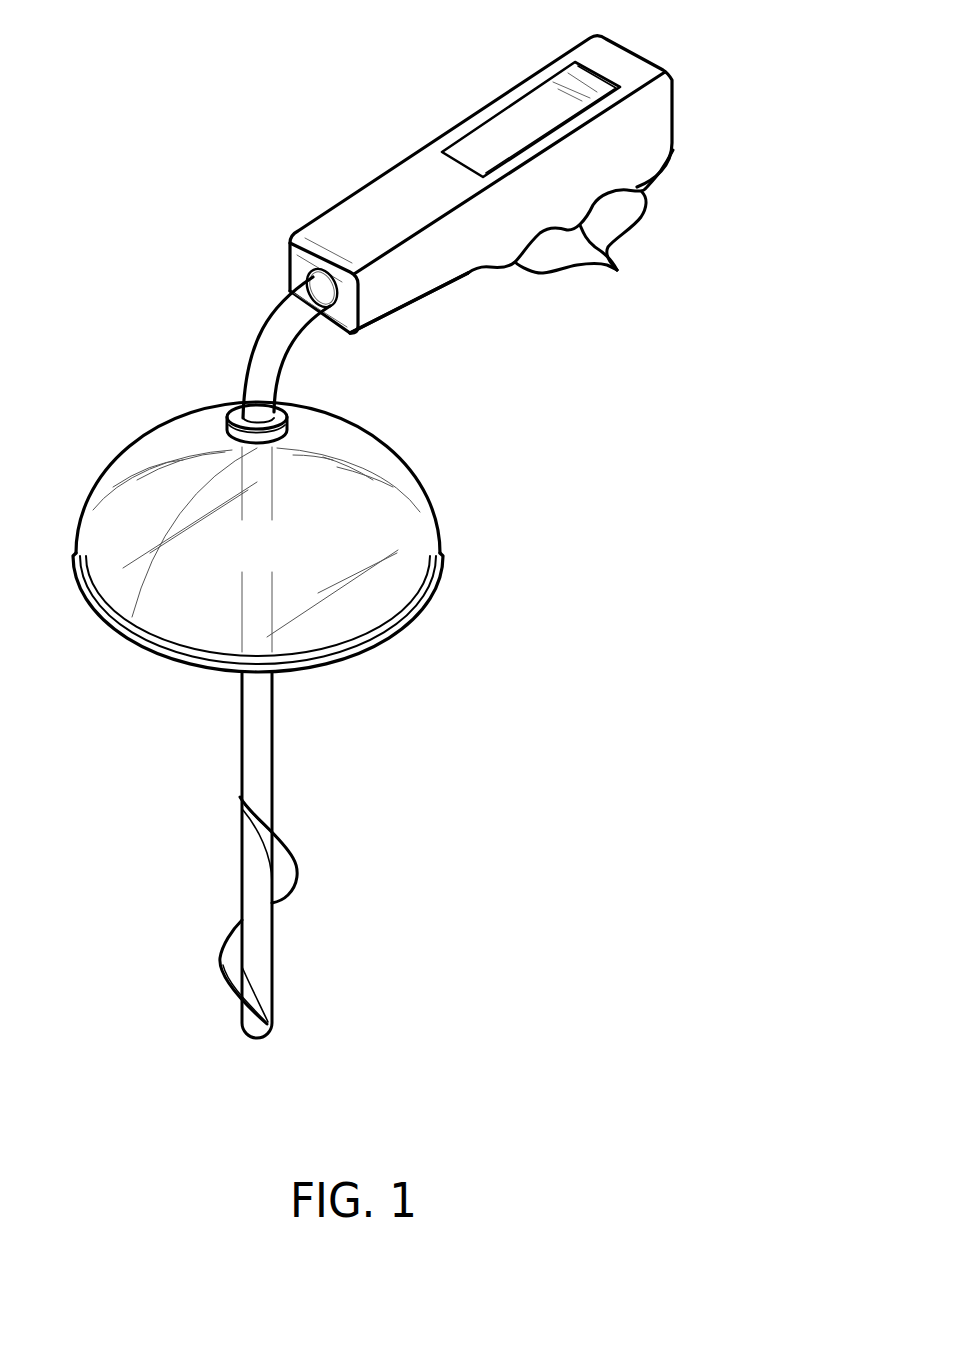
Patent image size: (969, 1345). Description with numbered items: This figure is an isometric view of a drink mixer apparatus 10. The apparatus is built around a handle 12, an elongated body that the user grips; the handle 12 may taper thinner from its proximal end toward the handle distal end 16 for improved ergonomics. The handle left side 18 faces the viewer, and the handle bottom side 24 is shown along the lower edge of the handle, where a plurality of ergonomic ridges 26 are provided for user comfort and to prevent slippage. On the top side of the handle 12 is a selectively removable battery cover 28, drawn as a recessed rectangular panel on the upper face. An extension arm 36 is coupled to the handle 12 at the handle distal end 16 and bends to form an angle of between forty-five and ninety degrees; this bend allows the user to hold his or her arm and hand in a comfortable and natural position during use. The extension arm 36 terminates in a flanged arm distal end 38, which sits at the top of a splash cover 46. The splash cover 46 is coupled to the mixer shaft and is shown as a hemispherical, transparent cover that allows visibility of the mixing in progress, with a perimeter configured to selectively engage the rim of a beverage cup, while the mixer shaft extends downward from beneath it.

The drink mixer apparatus 10 is at (752, 253).
The handle 12 is at (650, 102).
The handle distal end 16 is at (290, 263).
The handle left side 18 is at (387, 310).
The handle bottom side 24 is at (470, 272).
The ergonomic ridges 26 is at (617, 270).
The battery cover 28 is at (495, 147).
The extension arm 36 is at (270, 345).
The flanged arm distal end 38 is at (235, 422).
The splash cover 46 is at (432, 512).